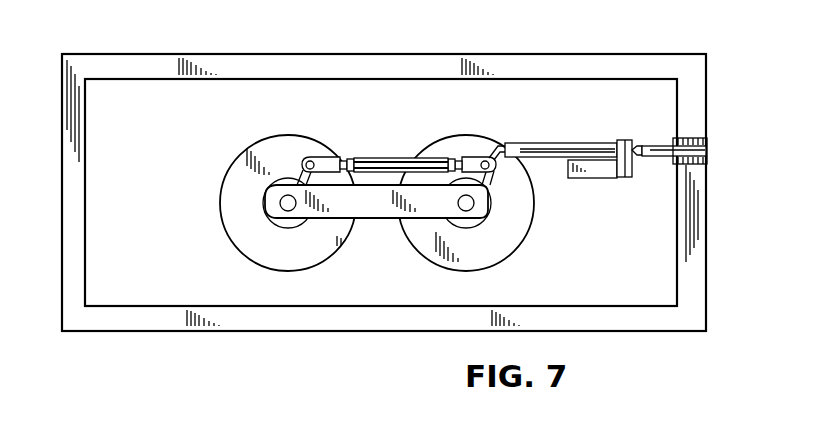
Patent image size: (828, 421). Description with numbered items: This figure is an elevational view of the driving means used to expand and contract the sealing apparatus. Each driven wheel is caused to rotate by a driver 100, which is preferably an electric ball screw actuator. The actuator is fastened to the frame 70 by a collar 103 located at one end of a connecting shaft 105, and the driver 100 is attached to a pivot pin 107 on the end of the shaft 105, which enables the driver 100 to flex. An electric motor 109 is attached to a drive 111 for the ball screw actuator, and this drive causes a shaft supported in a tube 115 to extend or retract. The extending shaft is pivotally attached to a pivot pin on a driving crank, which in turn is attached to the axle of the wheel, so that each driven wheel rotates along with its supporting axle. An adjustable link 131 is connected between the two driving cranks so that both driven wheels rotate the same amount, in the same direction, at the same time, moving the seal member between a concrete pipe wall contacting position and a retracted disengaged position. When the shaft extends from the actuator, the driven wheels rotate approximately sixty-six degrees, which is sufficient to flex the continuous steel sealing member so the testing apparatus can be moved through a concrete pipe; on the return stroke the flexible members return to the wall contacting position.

The frame 70 is at (487, 54).
The adjustable link 131 is at (370, 153).
The driver 100 is at (537, 145).
The tube 115 is at (565, 143).
The drive 111 is at (624, 139).
The electric motor 109 is at (577, 178).
The pivot pin 107 is at (639, 145).
The connecting shaft 105 is at (653, 157).
The collar 103 is at (678, 137).